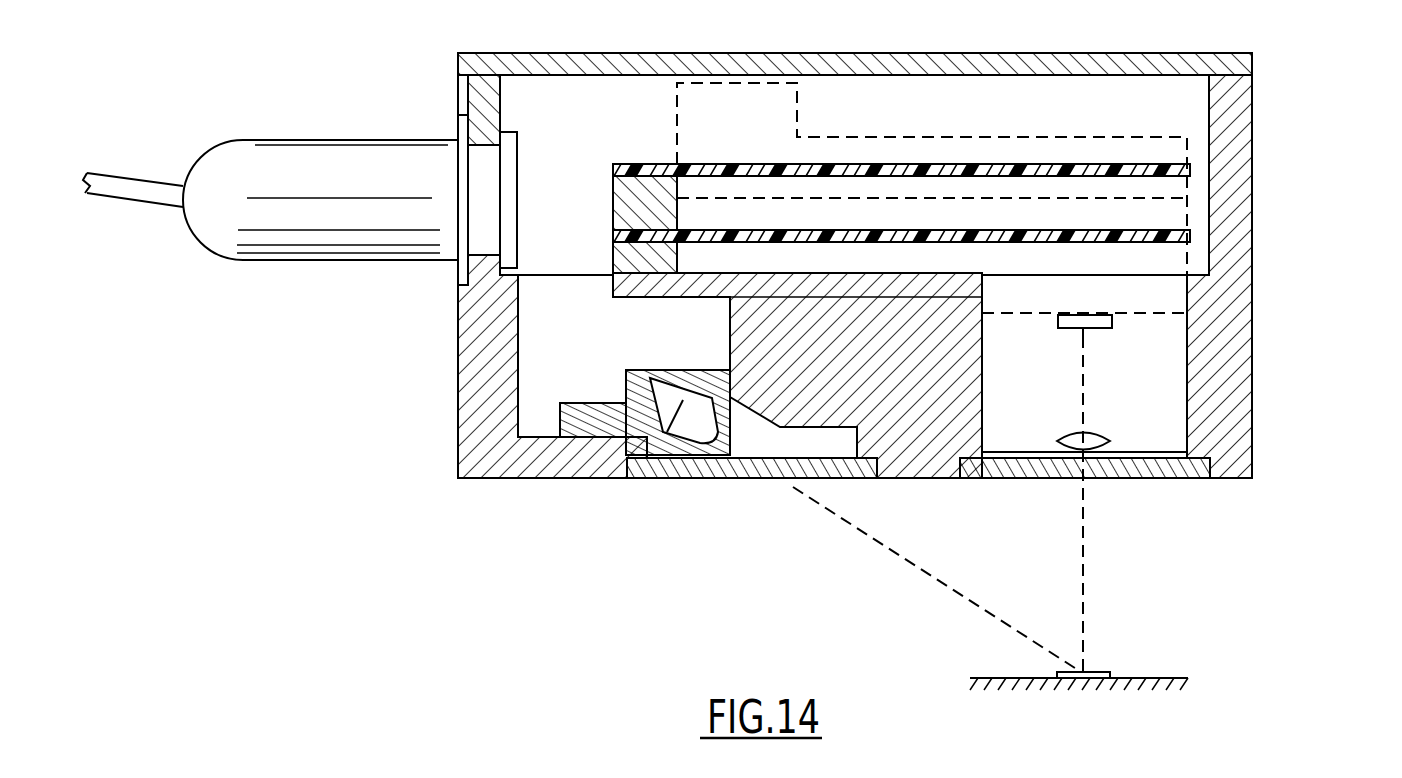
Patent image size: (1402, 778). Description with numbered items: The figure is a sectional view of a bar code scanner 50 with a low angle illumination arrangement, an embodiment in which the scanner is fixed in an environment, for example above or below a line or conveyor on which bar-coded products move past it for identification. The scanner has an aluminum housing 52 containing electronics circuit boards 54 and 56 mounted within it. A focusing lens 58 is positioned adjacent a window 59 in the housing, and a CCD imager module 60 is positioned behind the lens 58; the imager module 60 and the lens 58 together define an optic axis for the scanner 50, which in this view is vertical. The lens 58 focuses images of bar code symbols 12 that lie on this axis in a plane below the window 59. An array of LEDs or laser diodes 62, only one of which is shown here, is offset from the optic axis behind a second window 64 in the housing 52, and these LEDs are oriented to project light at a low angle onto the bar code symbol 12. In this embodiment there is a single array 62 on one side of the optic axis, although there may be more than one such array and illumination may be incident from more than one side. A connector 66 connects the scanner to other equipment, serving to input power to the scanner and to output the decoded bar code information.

The bar code scanner 50 is at (1396, 68).
The aluminum housing 52 is at (1255, 140).
The electronics circuit board 54 is at (860, 148).
The electronics circuit board 56 is at (1013, 210).
The focusing lens 58 is at (1070, 437).
The window 59 is at (1160, 480).
The CCD imager module 60 is at (1070, 330).
The array of LEDs or laser diodes 62 is at (645, 393).
The window 64 is at (700, 480).
The connector 66 is at (347, 148).
The bar code symbol 12 is at (1098, 672).